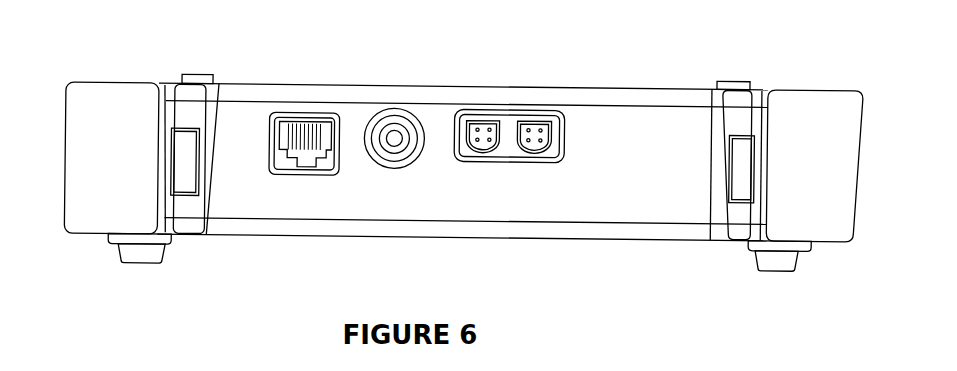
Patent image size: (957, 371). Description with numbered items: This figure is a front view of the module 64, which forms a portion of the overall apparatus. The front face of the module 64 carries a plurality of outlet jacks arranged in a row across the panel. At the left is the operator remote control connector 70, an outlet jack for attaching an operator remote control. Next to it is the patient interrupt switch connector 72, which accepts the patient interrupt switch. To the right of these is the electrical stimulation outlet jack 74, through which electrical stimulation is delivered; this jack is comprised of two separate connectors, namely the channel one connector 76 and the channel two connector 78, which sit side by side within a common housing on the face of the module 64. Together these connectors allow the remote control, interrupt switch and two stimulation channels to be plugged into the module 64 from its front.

The module 64 is at (688, 65).
The operator remote control connector 70 is at (306, 112).
The patient interrupt switch connector 72 is at (415, 102).
The electrical stimulation outlet jack 74 is at (515, 107).
The channel 1 connector 76 is at (483, 153).
The channel 2 connector 78 is at (542, 153).